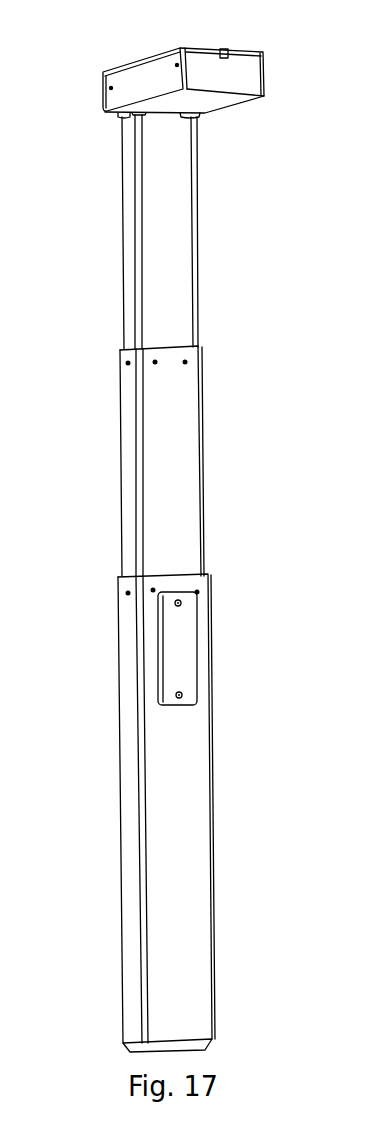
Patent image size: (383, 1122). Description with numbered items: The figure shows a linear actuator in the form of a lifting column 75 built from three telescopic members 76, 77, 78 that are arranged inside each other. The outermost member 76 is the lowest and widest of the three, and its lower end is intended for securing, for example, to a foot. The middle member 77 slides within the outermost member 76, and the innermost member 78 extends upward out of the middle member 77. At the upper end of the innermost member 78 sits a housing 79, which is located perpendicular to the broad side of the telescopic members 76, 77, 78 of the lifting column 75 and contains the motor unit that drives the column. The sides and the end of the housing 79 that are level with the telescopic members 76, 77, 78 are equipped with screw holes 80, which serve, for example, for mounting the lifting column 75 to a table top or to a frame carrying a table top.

The lifting column 75 is at (63, 91).
The outermost member 76 is at (127, 795).
The telescopic member 77 is at (122, 465).
The innermost member 78 is at (120, 227).
The housing 79 is at (247, 65).
The screw holes 80 is at (111, 87).